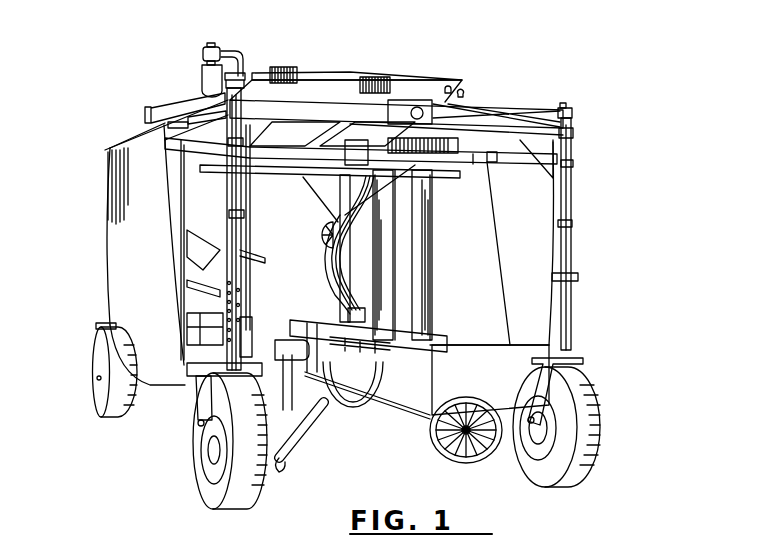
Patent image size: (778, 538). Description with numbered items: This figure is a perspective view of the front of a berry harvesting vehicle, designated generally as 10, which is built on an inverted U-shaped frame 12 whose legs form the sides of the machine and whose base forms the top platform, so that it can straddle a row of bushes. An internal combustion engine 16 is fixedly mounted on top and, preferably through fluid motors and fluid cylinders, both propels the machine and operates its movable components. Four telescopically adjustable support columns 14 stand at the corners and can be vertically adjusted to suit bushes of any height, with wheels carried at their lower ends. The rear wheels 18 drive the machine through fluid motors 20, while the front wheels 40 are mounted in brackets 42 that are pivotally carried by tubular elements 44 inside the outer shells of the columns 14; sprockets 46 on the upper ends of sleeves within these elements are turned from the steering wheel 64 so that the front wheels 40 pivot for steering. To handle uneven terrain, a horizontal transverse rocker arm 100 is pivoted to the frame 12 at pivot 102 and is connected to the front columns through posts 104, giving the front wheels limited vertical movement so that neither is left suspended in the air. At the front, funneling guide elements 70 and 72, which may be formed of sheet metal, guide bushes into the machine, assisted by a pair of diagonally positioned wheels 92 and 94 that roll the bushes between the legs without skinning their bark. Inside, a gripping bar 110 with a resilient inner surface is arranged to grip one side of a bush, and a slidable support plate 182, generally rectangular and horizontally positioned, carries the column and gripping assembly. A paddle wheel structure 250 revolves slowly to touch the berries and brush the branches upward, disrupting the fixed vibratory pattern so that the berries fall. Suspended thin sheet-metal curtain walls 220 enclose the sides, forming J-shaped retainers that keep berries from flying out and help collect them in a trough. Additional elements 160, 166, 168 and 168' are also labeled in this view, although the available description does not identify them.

The self-propelled machine 10 is at (566, 88).
The frame 12 is at (572, 122).
The support columns 14 is at (225, 95).
The internal combustion engine 16 is at (215, 44).
The rear wheels 18 is at (100, 405).
The fluid motors 20 is at (362, 308).
The front wheels 40 is at (255, 502).
The brackets 42 is at (197, 424).
The tubular elements 44 is at (185, 362).
The sprockets 46 is at (244, 78).
The steering wheel 64 is at (332, 237).
The funneling guide element 70 is at (310, 417).
The funneling guide element 72 is at (468, 355).
The diagonally positioned wheel 92 is at (283, 468).
The diagonally positioned wheel 94 is at (466, 440).
The rocker arm 100 is at (392, 108).
The pivot 102 is at (444, 92).
The posts 104 is at (226, 210).
The gripping bar 110 is at (300, 352).
The brace 160 is at (350, 168).
The column 166 is at (385, 180).
The column 168 is at (450, 255).
The panel 168' is at (153, 137).
The slidable support plate 182 is at (260, 165).
The curtain walls 220 is at (122, 252).
The paddle wheel structure 250 is at (248, 247).